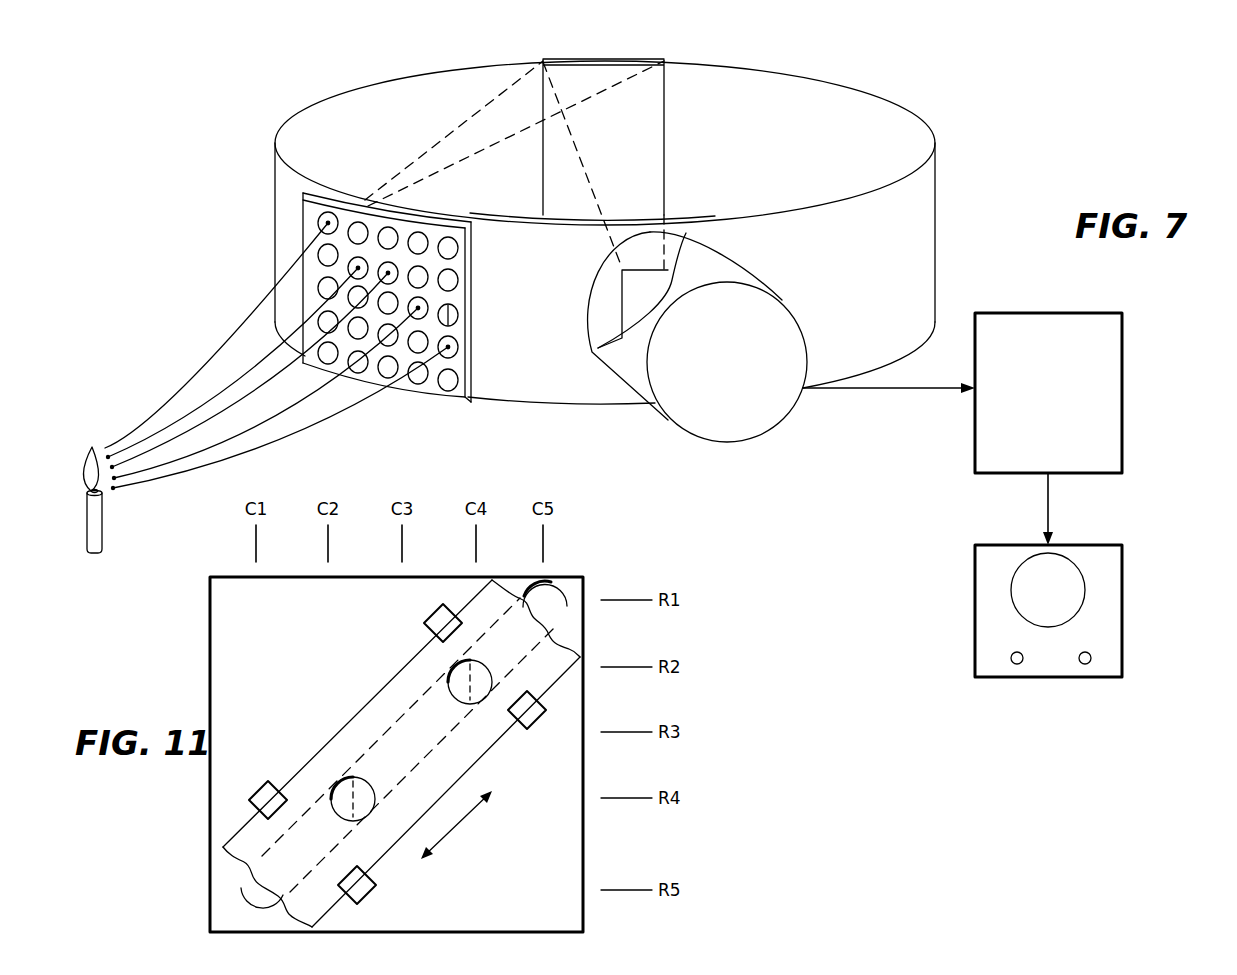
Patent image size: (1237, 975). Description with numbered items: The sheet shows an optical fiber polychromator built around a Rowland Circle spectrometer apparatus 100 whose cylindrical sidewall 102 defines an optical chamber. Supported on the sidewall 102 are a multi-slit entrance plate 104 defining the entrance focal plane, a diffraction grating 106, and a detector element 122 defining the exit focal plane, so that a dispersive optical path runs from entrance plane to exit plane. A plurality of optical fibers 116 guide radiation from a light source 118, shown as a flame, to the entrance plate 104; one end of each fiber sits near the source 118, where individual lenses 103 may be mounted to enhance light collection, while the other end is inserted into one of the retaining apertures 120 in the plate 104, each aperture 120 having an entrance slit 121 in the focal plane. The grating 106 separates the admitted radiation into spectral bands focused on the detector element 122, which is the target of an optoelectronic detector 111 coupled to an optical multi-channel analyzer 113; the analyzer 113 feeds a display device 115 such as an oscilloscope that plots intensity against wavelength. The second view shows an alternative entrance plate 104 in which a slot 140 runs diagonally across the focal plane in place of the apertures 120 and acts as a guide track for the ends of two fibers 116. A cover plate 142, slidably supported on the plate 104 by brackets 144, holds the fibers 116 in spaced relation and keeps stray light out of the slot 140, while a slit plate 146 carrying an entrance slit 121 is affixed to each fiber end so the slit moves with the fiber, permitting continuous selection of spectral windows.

In FIG. 7, the Rowland Circle spectrometer apparatus 100 is at (1017, 116).
In FIG. 7, the cylindrical sidewall 102 is at (930, 270).
In FIG. 7, the lenses 103 is at (103, 447).
In FIG. 7, the multi-slit entrance plate 104 is at (478, 352).
In FIG. 11, the multi-slit entrance plate 104 is at (582, 862).
In FIG. 7, the diffraction grating 106 is at (655, 58).
In FIG. 7, the optoelectronic detector 111 is at (762, 296).
In FIG. 7, the optical multi-channel analyzer 113 is at (1115, 387).
In FIG. 7, the display device 115 is at (1120, 628).
In FIG. 7, the optical fibers 116 is at (208, 358).
In FIG. 11, the optical fibers 116 is at (450, 696).
In FIG. 7, the light source 118 is at (84, 478).
In FIG. 7, the retaining apertures 120 is at (453, 281).
In FIG. 7, the entrance slit 121 is at (453, 313).
In FIG. 11, the entrance slit 121 is at (358, 777).
In FIG. 7, the detector element 122 is at (620, 290).
In FIG. 11, the slot 140 is at (565, 590).
In FIG. 11, the cover plate 142 is at (482, 757).
In FIG. 11, the brackets 144 is at (428, 619).
In FIG. 11, the slit plate 146 is at (409, 745).